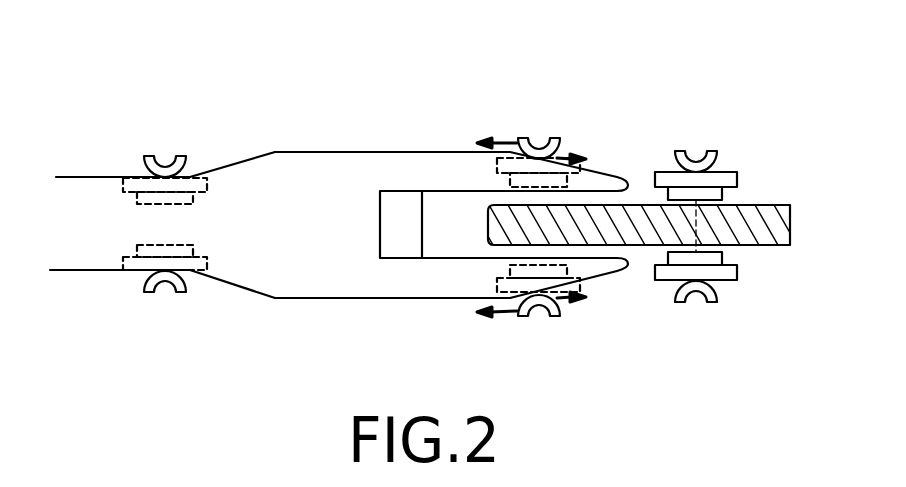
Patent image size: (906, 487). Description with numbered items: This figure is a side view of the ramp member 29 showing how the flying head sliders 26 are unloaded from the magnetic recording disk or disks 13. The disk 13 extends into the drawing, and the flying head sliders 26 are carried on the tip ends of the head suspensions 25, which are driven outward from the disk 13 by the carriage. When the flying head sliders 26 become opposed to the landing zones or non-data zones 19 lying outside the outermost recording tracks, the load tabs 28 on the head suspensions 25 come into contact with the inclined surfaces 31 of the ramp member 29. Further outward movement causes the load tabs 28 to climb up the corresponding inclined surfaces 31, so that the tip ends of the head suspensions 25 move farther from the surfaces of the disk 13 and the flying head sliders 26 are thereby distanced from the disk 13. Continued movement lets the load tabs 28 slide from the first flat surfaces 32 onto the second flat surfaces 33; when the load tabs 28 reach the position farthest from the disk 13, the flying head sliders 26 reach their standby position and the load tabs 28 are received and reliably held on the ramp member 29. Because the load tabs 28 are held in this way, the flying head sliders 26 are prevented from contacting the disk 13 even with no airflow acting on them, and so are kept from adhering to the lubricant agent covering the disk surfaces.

The magnetic recording disk 13 is at (488, 217).
The landing zone 19 is at (648, 205).
The head suspension 25 is at (727, 172).
The flying head slider 26 is at (722, 197).
The load tab 28 is at (165, 168).
The ramp member 29 is at (277, 150).
The inclined surface 31 is at (597, 168).
The first flat surface 32 is at (413, 152).
The second flat surface 33 is at (82, 177).